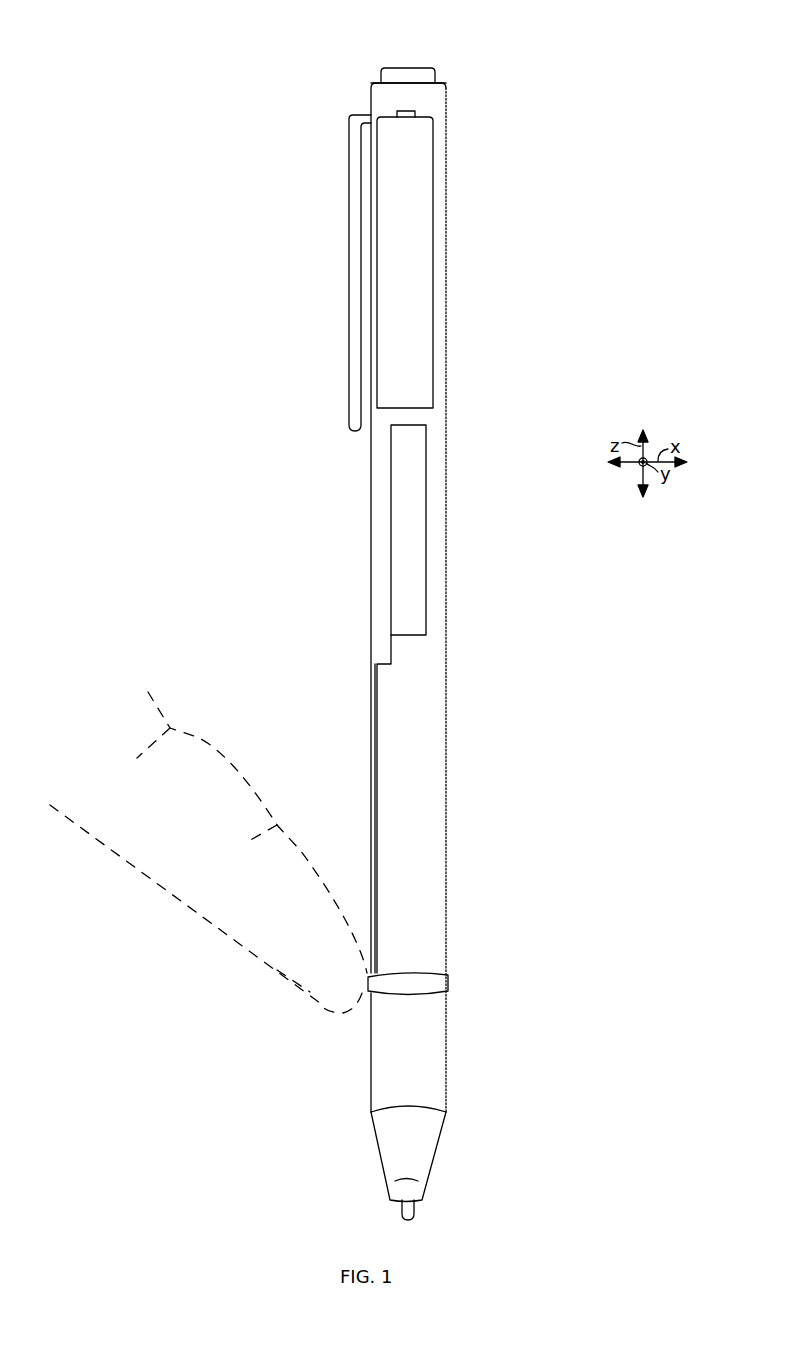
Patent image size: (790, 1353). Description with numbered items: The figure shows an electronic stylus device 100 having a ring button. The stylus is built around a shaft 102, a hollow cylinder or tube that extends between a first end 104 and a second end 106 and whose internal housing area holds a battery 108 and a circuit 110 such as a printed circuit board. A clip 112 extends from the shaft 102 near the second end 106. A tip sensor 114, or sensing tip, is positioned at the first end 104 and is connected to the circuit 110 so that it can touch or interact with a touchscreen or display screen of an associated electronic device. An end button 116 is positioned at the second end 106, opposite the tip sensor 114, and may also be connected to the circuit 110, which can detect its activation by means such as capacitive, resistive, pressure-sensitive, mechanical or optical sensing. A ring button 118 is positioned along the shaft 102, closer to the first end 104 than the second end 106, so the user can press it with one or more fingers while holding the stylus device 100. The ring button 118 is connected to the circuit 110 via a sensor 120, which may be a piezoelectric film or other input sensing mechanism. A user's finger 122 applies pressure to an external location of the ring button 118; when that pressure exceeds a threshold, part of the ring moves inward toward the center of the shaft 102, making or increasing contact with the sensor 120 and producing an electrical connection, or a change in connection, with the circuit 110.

The electronic stylus device 100 is at (115, 126).
The shaft 102 is at (371, 594).
The first end 104 is at (447, 1106).
The second end 106 is at (446, 88).
The battery 108 is at (388, 117).
The circuit 110 is at (391, 487).
The clip 112 is at (349, 190).
The tip sensor 114 is at (391, 1197).
The end button 116 is at (408, 67).
The ring button 118 is at (449, 978).
The sensor 120 is at (376, 698).
The user's finger 122 is at (208, 852).